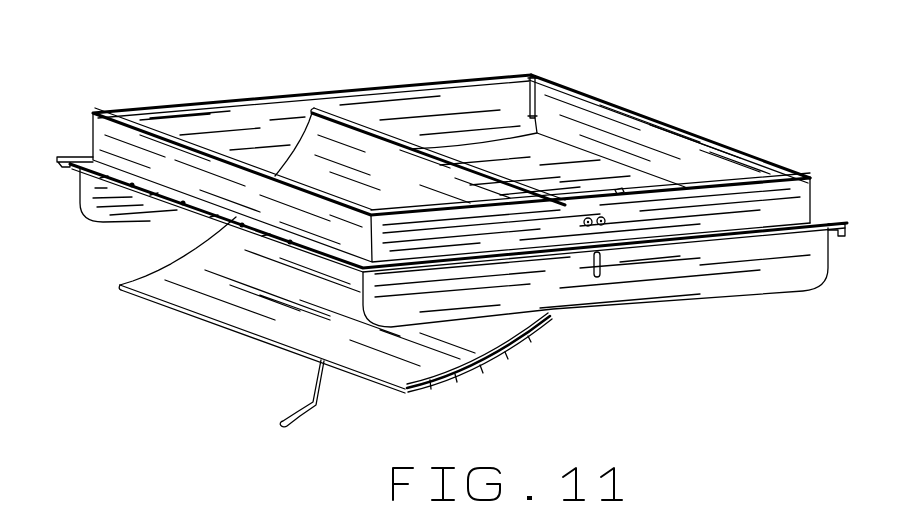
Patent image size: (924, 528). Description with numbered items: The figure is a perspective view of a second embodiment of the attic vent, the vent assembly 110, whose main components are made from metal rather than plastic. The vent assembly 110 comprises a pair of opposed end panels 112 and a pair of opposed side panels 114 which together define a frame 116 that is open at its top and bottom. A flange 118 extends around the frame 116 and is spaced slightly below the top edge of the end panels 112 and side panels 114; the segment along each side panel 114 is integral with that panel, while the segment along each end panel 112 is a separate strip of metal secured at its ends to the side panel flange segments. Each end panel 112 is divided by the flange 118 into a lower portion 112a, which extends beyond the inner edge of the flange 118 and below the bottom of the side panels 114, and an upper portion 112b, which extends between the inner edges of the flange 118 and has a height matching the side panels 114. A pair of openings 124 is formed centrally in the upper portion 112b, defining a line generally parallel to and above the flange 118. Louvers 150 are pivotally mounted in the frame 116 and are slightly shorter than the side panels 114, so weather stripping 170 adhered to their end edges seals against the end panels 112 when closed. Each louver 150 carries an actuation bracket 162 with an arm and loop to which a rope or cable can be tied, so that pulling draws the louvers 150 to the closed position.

The vent assembly 110 is at (476, 57).
The end panel 112 is at (254, 95).
The lower portion 112a is at (800, 269).
The upper portion 112b is at (717, 215).
The side panel 114 is at (740, 150).
The frame 116 is at (584, 92).
The flange 118 is at (187, 207).
The openings 124 is at (603, 228).
The louver 150 is at (271, 348).
The actuation bracket 162 is at (320, 403).
The weather stripping 170 is at (460, 372).